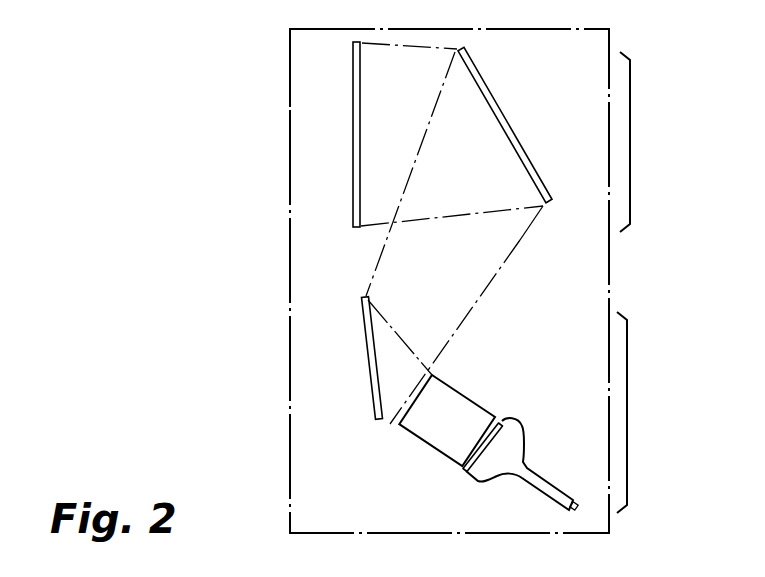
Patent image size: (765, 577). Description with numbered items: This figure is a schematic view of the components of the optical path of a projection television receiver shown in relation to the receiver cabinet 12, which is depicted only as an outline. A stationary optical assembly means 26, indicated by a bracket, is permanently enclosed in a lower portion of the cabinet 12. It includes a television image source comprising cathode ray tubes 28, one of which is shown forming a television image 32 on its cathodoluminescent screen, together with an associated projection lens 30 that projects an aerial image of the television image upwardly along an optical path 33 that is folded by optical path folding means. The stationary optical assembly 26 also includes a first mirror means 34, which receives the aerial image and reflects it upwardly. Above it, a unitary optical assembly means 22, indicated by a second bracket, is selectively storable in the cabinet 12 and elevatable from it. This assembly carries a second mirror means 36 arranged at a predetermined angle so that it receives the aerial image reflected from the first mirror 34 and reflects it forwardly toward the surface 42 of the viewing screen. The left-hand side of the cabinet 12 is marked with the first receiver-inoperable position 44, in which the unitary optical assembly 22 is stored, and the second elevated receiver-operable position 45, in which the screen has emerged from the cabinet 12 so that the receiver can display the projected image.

The cabinet 12 is at (289, 447).
The unitary optical assembly means 22 is at (630, 142).
The stationary optical assembly means 26 is at (627, 407).
The cathode ray tube 28 is at (520, 496).
The projection lens 30 is at (423, 445).
The television image 32 is at (473, 463).
The optical path 33 is at (520, 240).
The first mirror means 34 is at (374, 352).
The second mirror means 36 is at (494, 120).
The surface of screen 42 is at (360, 158).
The first receiver-inoperable position 44 is at (280, 348).
The second elevated receiver-operable position 45 is at (280, 136).